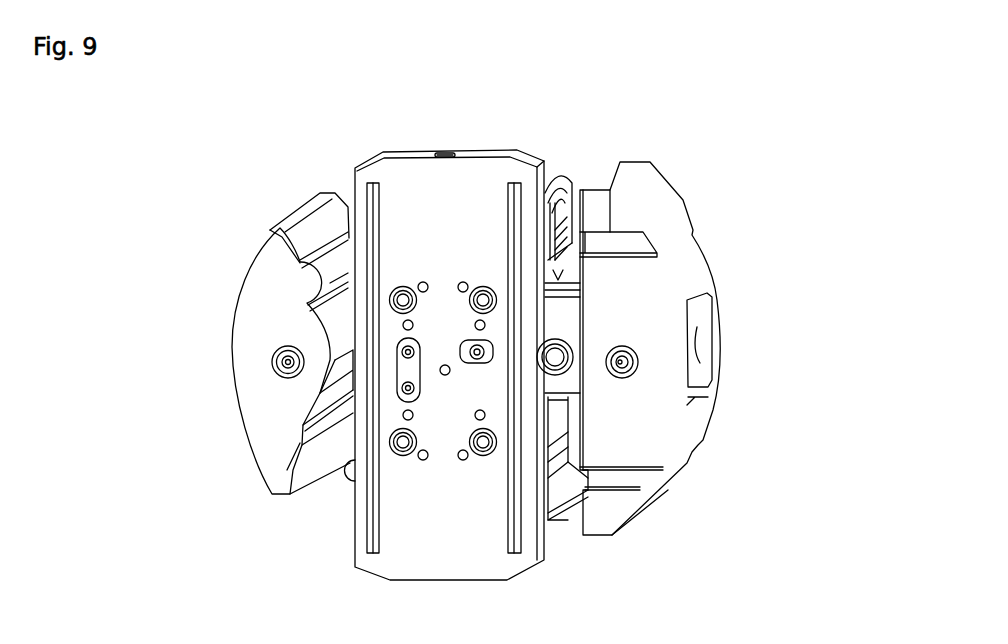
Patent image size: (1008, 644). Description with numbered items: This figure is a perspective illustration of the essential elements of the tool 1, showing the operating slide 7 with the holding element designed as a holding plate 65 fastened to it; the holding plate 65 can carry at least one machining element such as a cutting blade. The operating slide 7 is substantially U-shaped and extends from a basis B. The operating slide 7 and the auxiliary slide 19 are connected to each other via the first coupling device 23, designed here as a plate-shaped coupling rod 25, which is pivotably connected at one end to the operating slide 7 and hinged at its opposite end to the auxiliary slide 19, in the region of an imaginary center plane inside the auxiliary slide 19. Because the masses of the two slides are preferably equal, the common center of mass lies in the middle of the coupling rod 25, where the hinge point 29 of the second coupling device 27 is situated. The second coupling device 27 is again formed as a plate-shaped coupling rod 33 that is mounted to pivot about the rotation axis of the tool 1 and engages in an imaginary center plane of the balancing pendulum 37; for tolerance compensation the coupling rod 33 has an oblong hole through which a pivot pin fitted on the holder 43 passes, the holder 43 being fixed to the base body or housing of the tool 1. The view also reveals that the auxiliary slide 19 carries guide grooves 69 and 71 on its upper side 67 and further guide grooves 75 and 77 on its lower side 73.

The tool 1 is at (314, 134).
The operating slide 7 is at (564, 167).
The auxiliary slide 19 is at (680, 180).
The first coupling device 23 is at (558, 278).
The coupling rod 25 is at (583, 305).
The second coupling device 27 is at (308, 268).
The hinge point 29 is at (567, 372).
The coupling rod 33 is at (320, 388).
The balancing pendulum 37 is at (234, 423).
The holder 43 is at (348, 492).
The holding plate 65 is at (474, 148).
The upper side 67 is at (580, 310).
The guide groove 69 is at (683, 219).
The guide groove 71 is at (643, 480).
The lower side 73 is at (726, 297).
The guide groove 75 is at (690, 222).
The guide groove 77 is at (695, 452).
The basis B is at (575, 312).